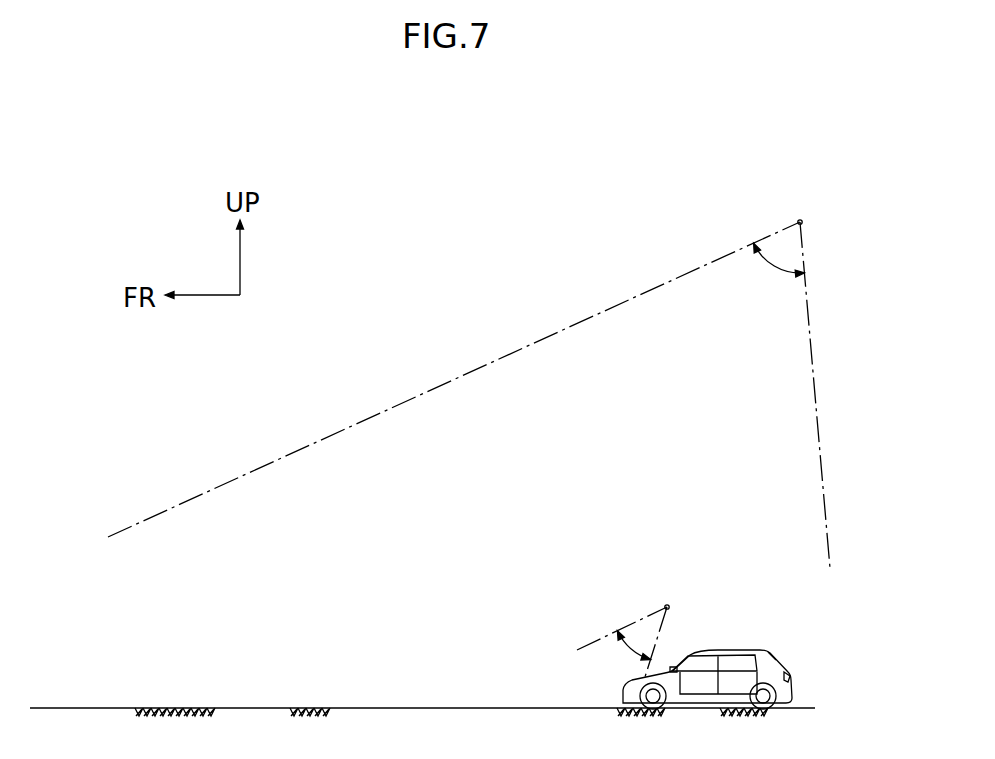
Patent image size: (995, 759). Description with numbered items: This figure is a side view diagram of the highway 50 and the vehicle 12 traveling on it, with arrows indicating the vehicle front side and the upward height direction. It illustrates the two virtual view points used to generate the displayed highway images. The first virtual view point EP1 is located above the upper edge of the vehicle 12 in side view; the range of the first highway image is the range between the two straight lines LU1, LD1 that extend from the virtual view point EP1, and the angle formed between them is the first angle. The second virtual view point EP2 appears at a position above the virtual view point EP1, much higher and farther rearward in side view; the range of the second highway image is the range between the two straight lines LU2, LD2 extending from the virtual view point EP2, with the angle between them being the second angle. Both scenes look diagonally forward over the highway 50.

The highway 50 is at (97, 708).
The vehicle 12 is at (779, 630).
The straight line LU2 is at (420, 393).
The straight line LD2 is at (816, 381).
The virtual view point EP2 is at (800, 219).
The straight line LU1 is at (617, 637).
The straight line LD1 is at (660, 645).
The virtual view point EP1 is at (668, 604).